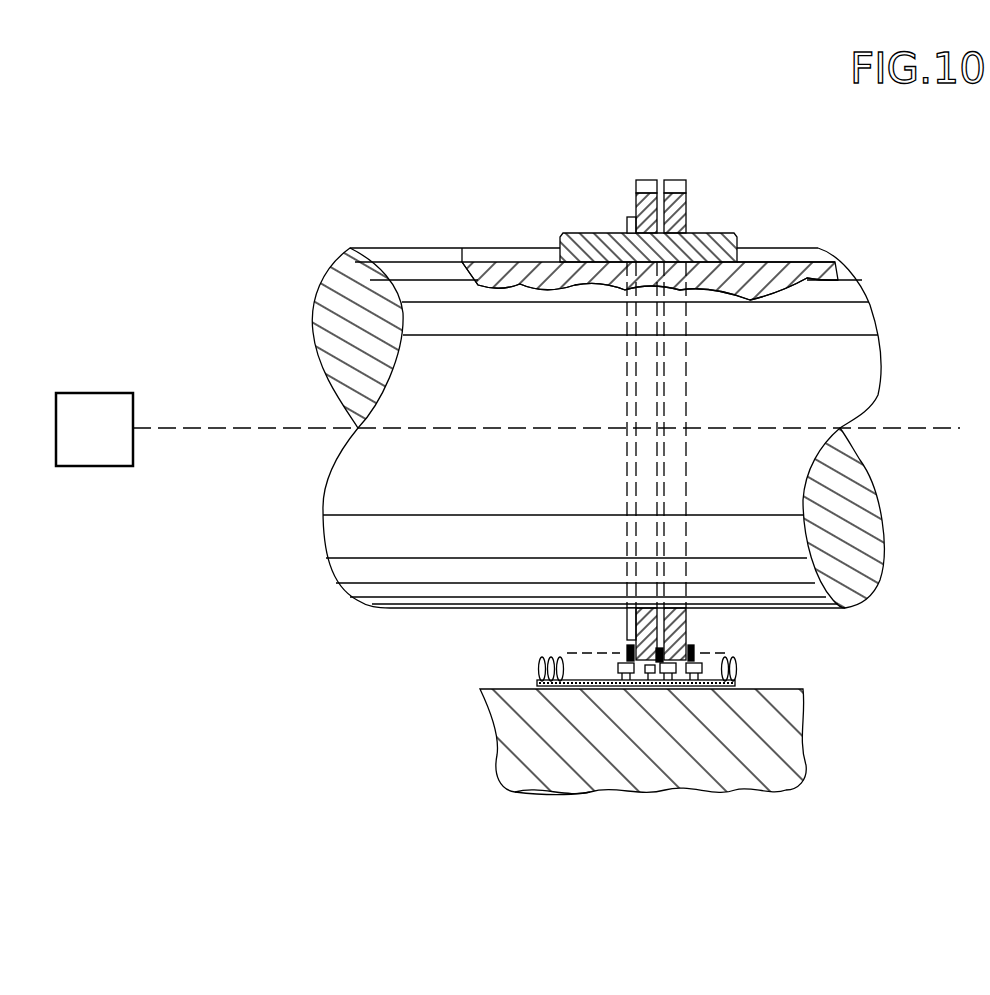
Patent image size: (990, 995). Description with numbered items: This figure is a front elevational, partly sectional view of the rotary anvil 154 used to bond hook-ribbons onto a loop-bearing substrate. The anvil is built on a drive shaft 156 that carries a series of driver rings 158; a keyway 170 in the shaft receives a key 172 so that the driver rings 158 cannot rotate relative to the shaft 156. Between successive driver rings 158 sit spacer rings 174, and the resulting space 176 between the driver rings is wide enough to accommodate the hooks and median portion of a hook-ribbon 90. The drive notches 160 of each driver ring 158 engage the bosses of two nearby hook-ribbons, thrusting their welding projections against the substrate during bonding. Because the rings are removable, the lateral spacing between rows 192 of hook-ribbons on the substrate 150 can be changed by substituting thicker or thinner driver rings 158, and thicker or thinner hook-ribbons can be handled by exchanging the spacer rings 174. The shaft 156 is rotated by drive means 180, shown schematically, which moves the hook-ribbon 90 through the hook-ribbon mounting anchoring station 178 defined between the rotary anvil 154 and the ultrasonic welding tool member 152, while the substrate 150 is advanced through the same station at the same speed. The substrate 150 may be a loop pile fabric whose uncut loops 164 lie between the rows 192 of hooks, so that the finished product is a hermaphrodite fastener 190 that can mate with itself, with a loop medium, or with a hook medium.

The rotary anvil 154 is at (829, 185).
The drive shaft 156 is at (868, 587).
The keyway 170 is at (487, 258).
The key 172 is at (577, 233).
The spacer ring 174 is at (627, 218).
The drive notch 160 is at (678, 180).
The driver ring 158 is at (687, 207).
The space 176 is at (672, 652).
The rows 192 is at (630, 650).
The hook-ribbon mounting anchoring station 178 is at (542, 632).
The hook-ribbon 90 is at (620, 664).
The loops 164 is at (540, 658).
The hermaphrodite fastener 190 is at (752, 664).
The substrate 150 is at (561, 696).
The ultrasonic welding tool member 152 is at (707, 783).
The drive means 180 is at (72, 442).